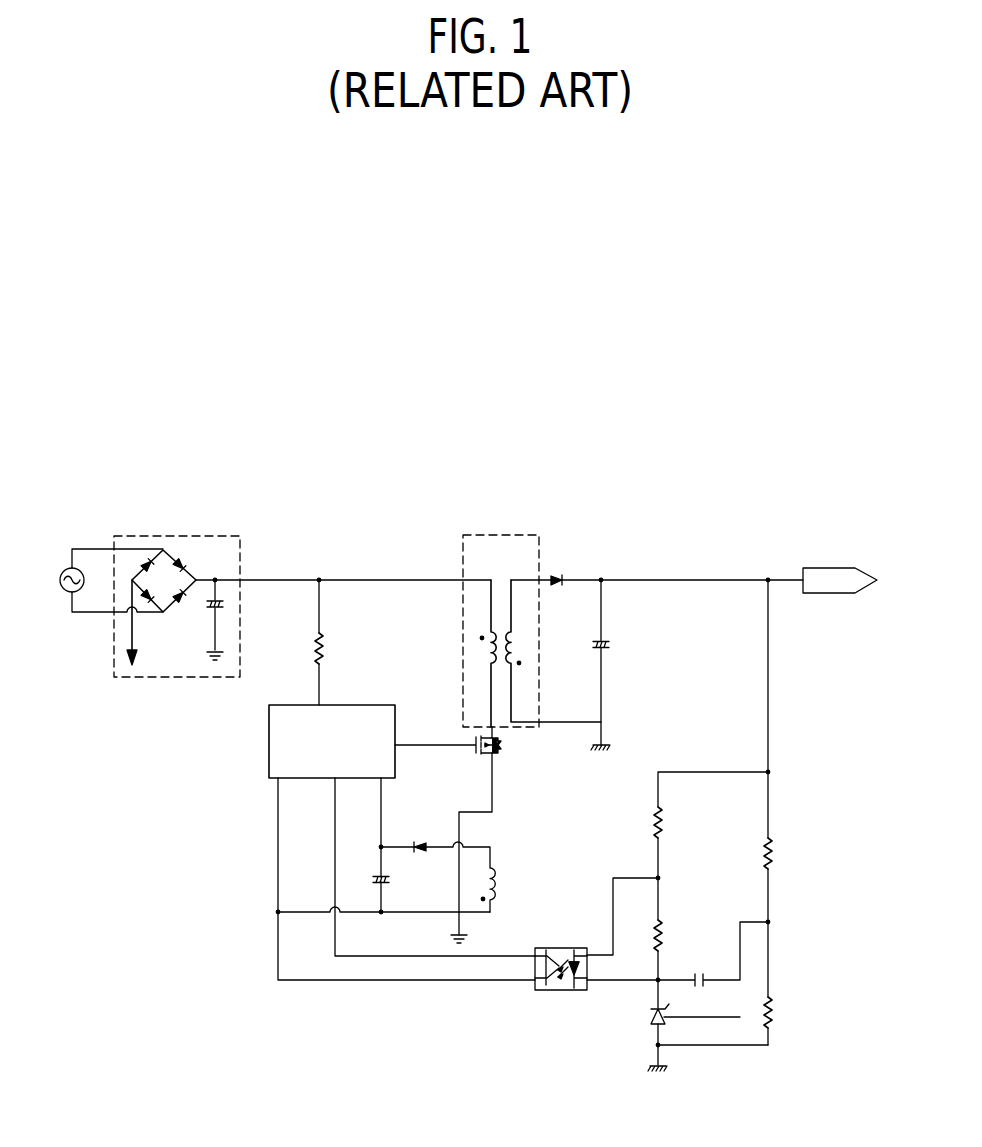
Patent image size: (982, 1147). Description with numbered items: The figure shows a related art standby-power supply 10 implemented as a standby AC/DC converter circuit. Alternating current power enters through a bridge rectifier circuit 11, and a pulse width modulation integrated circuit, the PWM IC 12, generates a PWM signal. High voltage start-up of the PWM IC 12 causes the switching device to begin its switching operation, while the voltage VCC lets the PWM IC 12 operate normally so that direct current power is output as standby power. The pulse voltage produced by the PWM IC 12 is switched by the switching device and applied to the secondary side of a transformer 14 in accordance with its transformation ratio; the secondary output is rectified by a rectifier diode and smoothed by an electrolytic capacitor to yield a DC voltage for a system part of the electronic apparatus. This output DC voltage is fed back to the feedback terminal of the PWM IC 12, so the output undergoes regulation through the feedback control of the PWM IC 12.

The standby-power supply 10 is at (758, 503).
The bridge rectifier circuit 11 is at (175, 533).
The PWM IC 12 is at (365, 705).
The transformer 14 is at (495, 533).